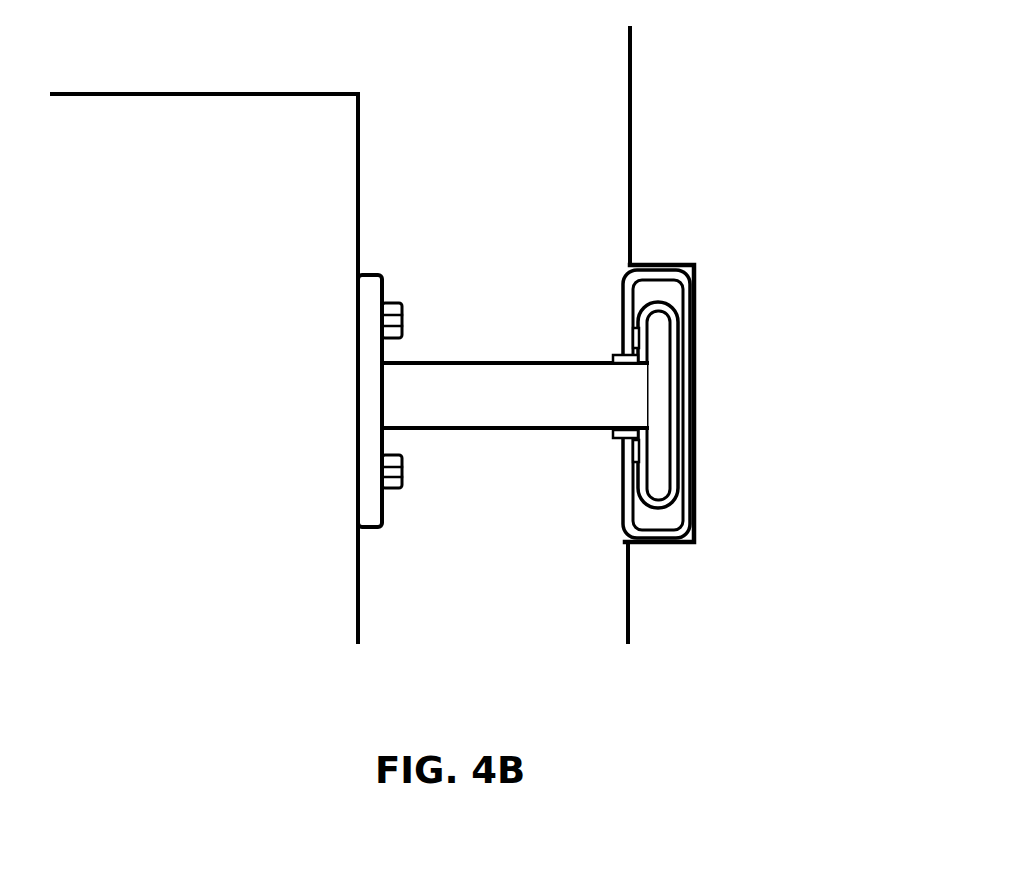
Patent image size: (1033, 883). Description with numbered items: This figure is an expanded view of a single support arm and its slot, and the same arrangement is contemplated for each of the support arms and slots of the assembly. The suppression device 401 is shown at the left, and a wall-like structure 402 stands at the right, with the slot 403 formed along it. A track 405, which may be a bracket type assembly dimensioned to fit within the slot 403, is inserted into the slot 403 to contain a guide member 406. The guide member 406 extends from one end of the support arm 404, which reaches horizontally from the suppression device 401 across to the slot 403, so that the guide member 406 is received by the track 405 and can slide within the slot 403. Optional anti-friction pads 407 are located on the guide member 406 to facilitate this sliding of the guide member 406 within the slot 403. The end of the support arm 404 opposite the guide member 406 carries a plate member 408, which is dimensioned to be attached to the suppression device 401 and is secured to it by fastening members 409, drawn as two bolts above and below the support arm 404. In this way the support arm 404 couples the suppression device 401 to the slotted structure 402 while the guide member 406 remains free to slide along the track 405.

The suppression device 401 is at (205, 368).
The second wall / structure 402 is at (734, 335).
The slot 403 is at (710, 254).
The support arm 404 is at (497, 144).
The track 405 is at (614, 262).
The guide member 406 is at (665, 483).
The anti-friction pads 407 is at (659, 347).
The plate member 408 is at (373, 259).
The fastening members 409 is at (407, 281).